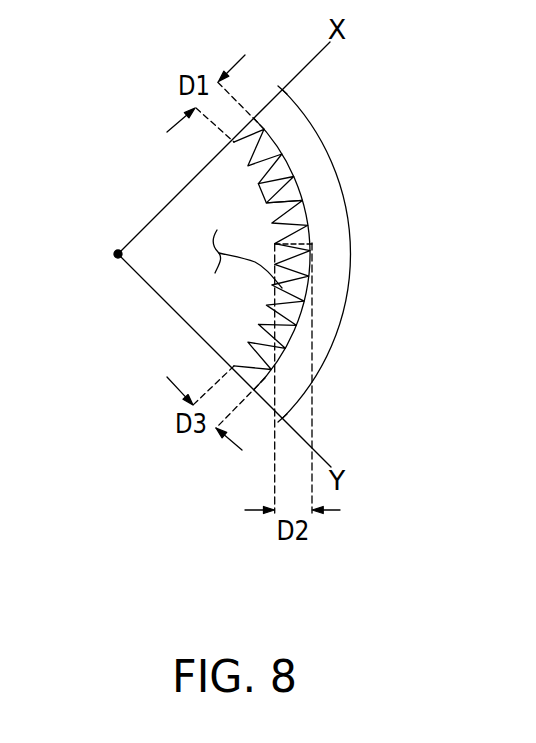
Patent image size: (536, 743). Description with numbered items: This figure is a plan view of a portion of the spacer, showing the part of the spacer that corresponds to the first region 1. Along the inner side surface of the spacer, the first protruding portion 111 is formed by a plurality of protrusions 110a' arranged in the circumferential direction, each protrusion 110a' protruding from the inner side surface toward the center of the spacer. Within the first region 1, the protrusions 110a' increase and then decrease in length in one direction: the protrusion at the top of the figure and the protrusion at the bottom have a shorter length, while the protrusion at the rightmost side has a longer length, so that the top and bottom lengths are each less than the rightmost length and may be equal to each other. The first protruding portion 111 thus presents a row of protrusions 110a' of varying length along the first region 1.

The first region 1 is at (281, 279).
The first protruding portion 111 is at (285, 195).
The protrusion 110a' is at (187, 204).